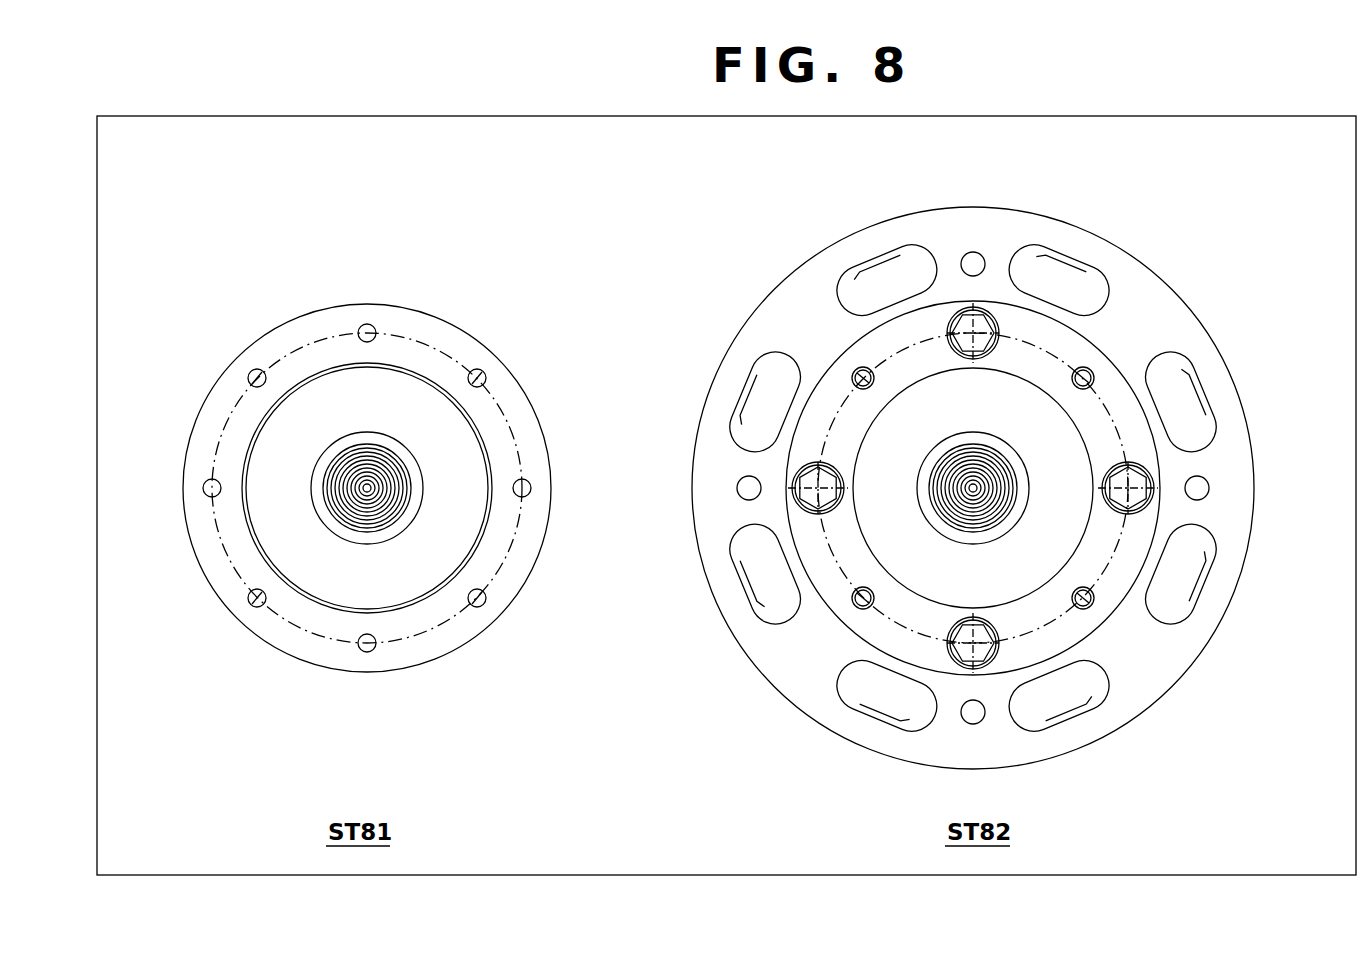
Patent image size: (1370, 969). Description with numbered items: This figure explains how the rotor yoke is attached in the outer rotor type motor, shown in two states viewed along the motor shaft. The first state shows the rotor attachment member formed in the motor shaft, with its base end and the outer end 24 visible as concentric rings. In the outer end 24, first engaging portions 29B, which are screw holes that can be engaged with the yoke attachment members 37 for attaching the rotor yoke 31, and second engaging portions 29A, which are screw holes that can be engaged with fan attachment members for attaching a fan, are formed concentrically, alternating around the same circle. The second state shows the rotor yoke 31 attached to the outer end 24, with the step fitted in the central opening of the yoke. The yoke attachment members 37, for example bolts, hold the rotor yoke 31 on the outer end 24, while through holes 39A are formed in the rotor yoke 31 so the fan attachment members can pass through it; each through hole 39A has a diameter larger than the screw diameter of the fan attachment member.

The outer end 24 is at (305, 358).
The second engaging portions 29A is at (250, 377).
The first engaging portions 29B is at (367, 326).
The rotor yoke 31 is at (872, 222).
The yoke attachment members 37 is at (980, 325).
The through holes 39A is at (856, 370).